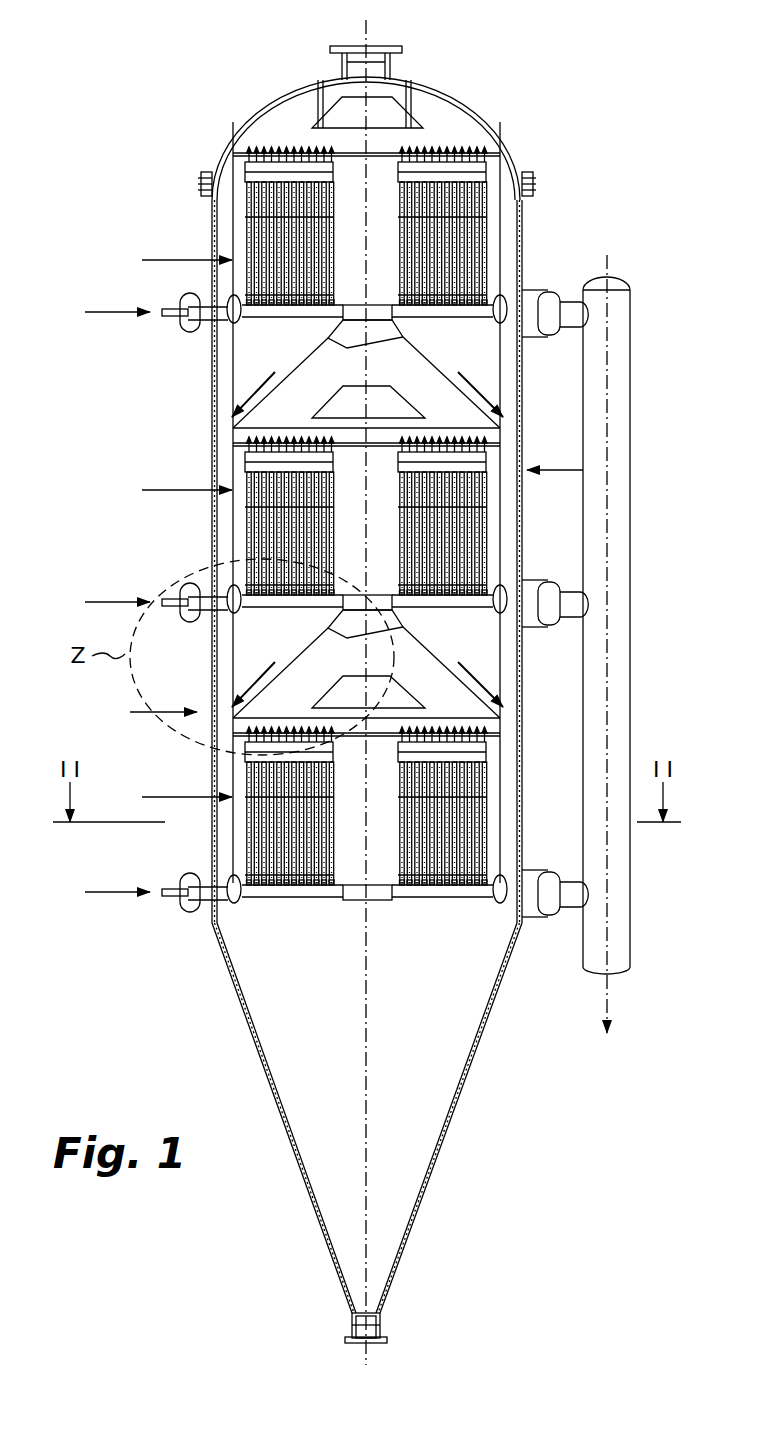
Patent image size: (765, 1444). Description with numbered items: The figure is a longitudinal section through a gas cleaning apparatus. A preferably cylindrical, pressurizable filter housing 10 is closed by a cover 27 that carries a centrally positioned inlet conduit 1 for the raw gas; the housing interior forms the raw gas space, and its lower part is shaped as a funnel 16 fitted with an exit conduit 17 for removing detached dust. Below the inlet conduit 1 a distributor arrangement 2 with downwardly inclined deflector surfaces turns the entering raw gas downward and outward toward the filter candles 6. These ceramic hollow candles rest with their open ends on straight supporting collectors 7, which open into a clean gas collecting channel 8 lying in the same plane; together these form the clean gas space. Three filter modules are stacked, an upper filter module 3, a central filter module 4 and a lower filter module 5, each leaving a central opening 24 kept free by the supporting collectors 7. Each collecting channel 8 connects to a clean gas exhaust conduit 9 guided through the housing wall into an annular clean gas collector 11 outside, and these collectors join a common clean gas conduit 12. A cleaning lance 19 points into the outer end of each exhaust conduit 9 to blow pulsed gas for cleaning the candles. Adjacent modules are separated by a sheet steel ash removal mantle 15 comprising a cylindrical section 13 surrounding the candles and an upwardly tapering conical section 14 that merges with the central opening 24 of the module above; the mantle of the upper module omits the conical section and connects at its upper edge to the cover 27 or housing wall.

The inlet conduit 1 is at (392, 47).
The distributor arrangement 2 is at (420, 126).
The upper filter module 3 is at (187, 245).
The central filter module 4 is at (187, 475).
The lower filter module 5 is at (187, 782).
The filter candles 6 is at (325, 260).
The supporting collectors 7 is at (278, 318).
The clean gas collecting channel 8 is at (241, 322).
The clean gas exhaust conduit 9 is at (232, 324).
The filter housing 10 is at (356, 542).
The annular clean gas collector 11 is at (190, 333).
The clean gas conduit 12 is at (616, 918).
The cylindrical section 13 is at (230, 212).
The conical section 14 is at (366, 519).
The ash removal mantle 15 is at (503, 240).
The funnel 16 is at (266, 1072).
The exit conduit 17 is at (388, 1343).
The cleaning lance 19 is at (117, 587).
The central opening 24 is at (358, 305).
The cover 27 is at (467, 92).